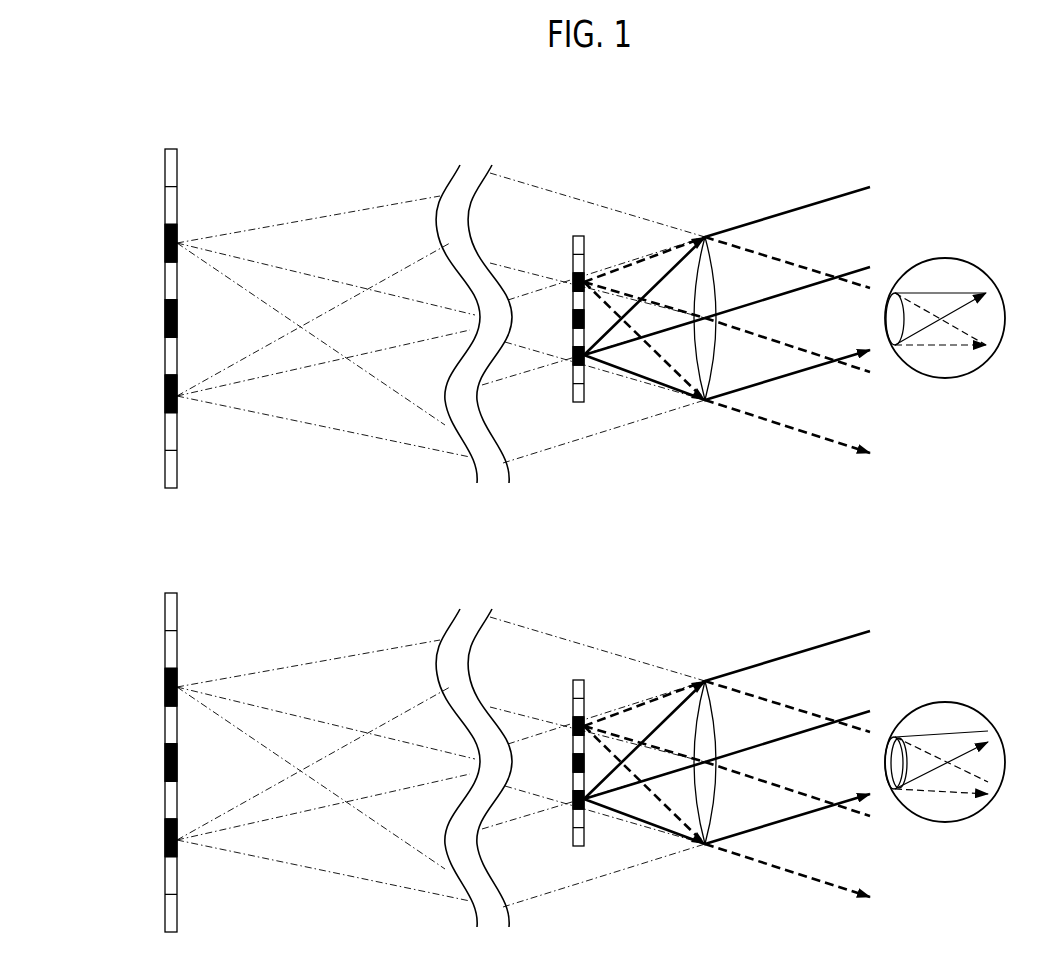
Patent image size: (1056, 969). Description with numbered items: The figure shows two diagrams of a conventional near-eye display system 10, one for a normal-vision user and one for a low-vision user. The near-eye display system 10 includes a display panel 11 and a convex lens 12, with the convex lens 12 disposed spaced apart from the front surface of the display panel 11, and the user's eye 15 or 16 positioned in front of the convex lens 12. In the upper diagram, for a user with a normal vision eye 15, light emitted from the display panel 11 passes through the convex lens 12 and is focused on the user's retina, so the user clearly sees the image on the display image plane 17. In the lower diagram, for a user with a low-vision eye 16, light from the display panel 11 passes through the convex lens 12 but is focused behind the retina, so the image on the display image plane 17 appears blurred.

The near-eye display system 10 is at (283, 135).
The display panel 11 is at (578, 236).
The convex lens 12 is at (705, 237).
The normal vision eye 15 is at (1005, 318).
The low-vision eye 16 is at (1005, 762).
The display image plane 17 is at (165, 159).